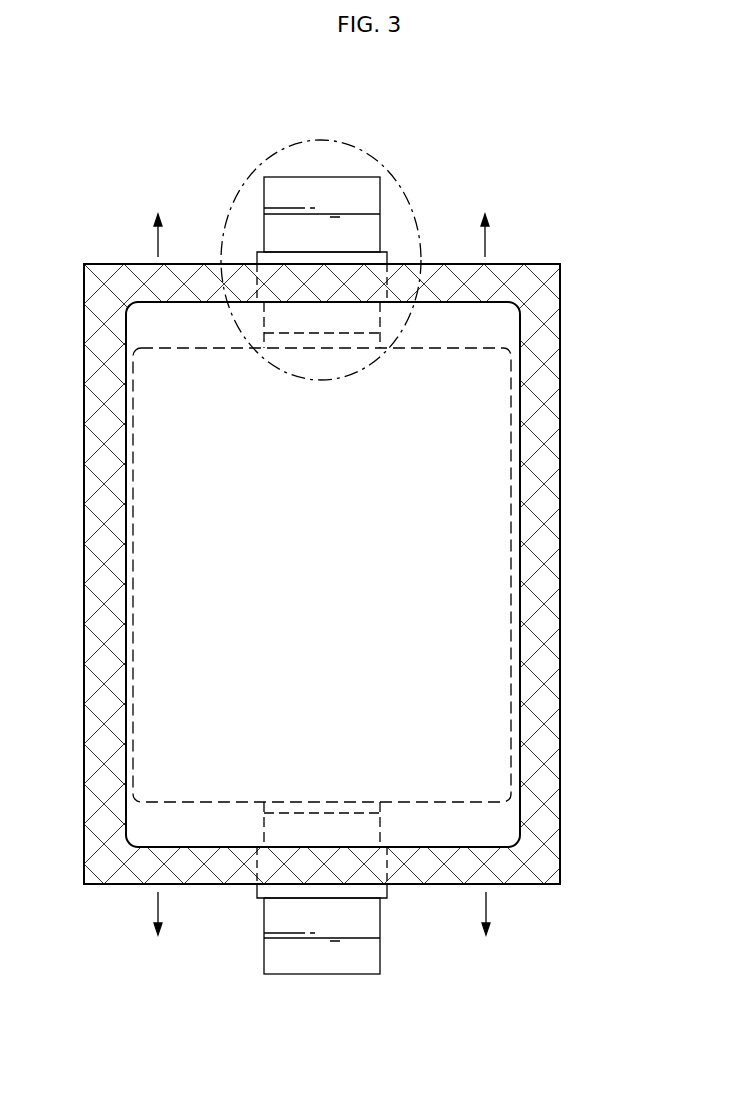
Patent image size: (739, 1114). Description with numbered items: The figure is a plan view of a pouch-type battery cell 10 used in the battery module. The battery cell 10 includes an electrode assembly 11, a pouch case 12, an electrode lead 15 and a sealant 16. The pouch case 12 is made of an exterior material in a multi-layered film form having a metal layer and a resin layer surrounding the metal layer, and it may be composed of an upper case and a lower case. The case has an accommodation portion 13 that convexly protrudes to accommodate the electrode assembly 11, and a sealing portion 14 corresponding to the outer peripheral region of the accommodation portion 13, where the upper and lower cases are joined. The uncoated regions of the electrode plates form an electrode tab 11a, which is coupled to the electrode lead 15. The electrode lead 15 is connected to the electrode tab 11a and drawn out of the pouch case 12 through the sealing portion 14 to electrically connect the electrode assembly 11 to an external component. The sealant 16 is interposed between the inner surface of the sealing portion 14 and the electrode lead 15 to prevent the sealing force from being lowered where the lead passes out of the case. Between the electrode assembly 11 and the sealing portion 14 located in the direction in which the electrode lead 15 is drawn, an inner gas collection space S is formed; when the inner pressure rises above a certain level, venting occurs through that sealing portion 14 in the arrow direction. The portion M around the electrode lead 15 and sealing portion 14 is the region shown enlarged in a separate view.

The battery cell 10 is at (452, 125).
The electrode assembly 11 is at (207, 802).
The electrode tab 11a is at (380, 813).
The pouch case 12 is at (616, 418).
The accommodation portion 13 is at (492, 428).
The sealing portion 14 is at (546, 512).
The electrode lead 15 is at (380, 197).
The sealant 16 is at (386, 255).
The portion M is at (377, 158).
The inner gas collection space S is at (472, 324).